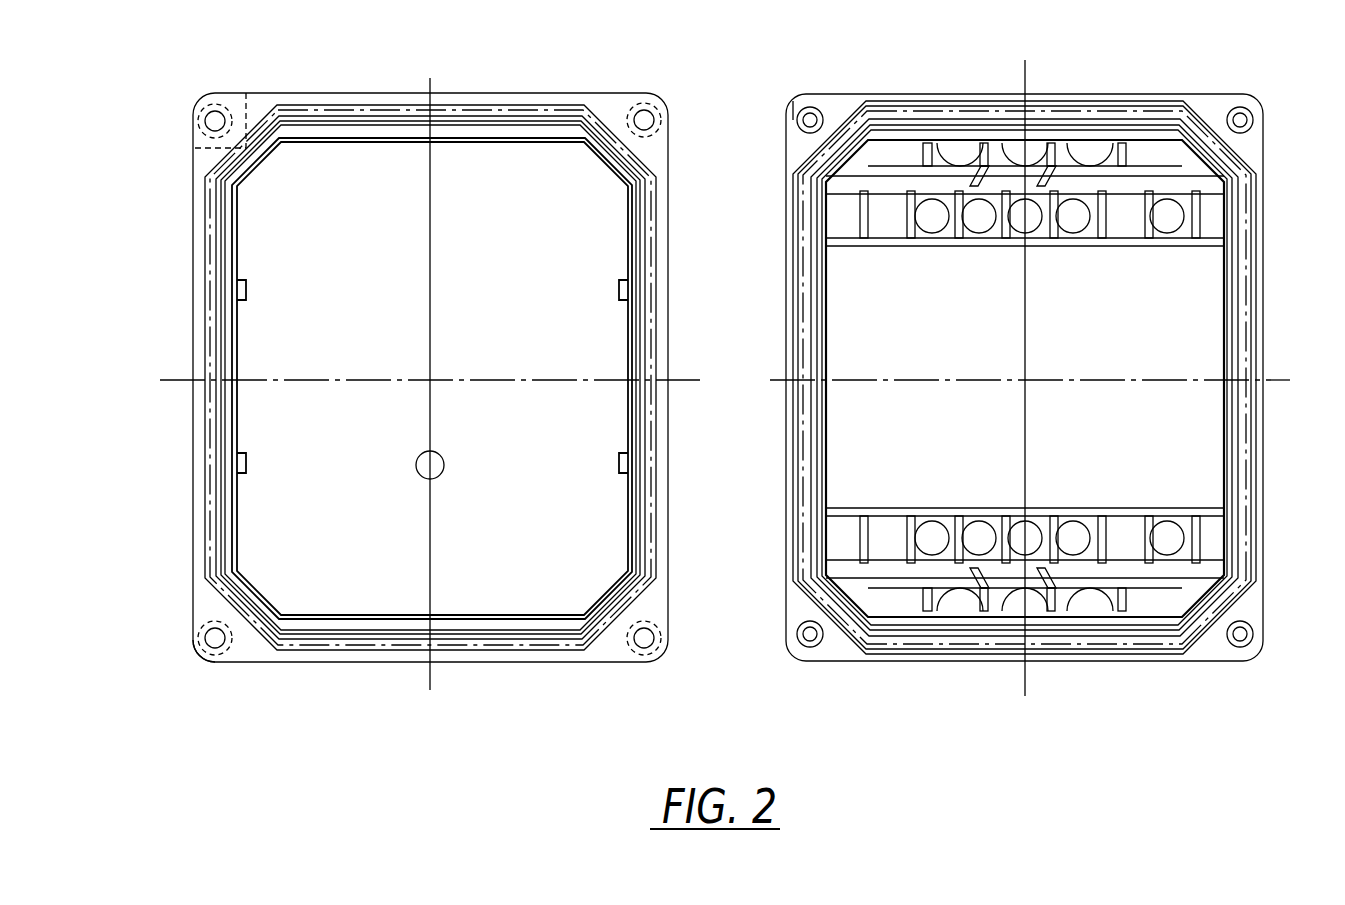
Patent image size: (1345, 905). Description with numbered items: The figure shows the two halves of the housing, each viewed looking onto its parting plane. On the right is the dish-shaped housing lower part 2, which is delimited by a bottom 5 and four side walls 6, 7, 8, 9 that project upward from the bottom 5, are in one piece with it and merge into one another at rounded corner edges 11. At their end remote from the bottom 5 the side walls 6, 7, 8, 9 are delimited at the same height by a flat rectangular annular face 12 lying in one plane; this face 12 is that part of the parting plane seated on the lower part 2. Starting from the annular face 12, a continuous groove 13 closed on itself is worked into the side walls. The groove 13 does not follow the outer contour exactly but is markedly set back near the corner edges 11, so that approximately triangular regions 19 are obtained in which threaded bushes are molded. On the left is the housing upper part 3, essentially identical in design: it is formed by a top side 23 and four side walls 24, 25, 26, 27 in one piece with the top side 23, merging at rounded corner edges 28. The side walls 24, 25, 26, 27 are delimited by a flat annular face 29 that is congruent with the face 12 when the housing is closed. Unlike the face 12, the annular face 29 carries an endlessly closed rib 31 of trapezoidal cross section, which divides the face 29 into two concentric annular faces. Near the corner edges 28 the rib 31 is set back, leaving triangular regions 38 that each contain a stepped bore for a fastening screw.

The housing lower part 2 is at (1088, 75).
The housing upper part 3 is at (368, 62).
The bottom 5 is at (1027, 372).
The side wall 6 is at (1265, 348).
The side wall 7 is at (958, 97).
The side wall 8 is at (785, 338).
The side wall 9 is at (956, 664).
The rounded corner edges 11 is at (801, 96).
The rectangular face 12 is at (834, 103).
The groove 13 is at (1148, 115).
The triangular regions 19 is at (787, 144).
The top side 23 is at (352, 335).
The side wall 24 is at (670, 304).
The side wall 25 is at (492, 93).
The side wall 26 is at (191, 256).
The side wall 27 is at (386, 664).
The rounded corner edges 28 is at (661, 100).
The annular face 29 is at (240, 656).
The rib 31 is at (573, 103).
The triangular regions 38 is at (236, 104).